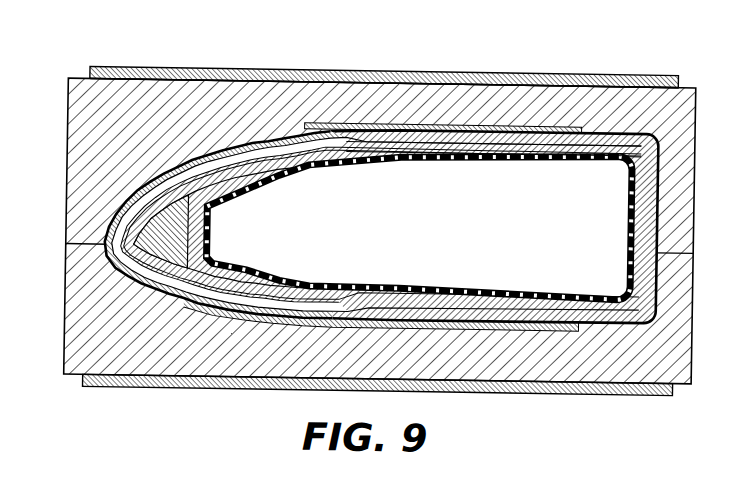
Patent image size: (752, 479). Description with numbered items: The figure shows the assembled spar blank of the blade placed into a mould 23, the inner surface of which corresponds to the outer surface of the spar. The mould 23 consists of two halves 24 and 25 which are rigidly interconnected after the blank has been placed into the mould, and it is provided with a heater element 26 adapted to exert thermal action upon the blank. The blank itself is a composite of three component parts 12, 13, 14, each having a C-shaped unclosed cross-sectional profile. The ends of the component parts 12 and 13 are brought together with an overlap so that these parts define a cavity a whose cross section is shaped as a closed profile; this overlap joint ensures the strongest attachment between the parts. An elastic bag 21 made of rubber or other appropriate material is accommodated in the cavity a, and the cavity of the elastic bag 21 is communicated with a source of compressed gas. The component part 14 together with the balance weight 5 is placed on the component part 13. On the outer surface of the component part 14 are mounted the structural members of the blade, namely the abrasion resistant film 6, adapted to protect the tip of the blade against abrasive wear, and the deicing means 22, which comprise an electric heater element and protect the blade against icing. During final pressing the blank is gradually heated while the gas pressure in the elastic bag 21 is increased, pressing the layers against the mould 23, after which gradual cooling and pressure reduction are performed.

The mould 23 is at (694, 83).
The mould half 24 is at (428, 76).
The heater element 26 is at (490, 73).
The mould half 25 is at (68, 268).
The cavity a is at (562, 174).
The elastic bag 21 is at (482, 155).
The abrasion resistant film 6 is at (122, 209).
The deicing means 22 is at (162, 190).
The balance weight 5 is at (166, 300).
The component part 12 is at (417, 156).
The component part 13 is at (364, 158).
The component part 14 is at (302, 168).